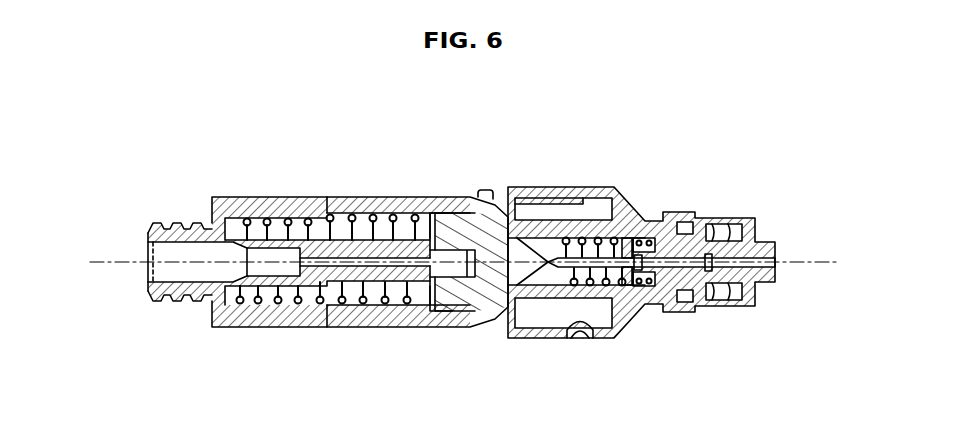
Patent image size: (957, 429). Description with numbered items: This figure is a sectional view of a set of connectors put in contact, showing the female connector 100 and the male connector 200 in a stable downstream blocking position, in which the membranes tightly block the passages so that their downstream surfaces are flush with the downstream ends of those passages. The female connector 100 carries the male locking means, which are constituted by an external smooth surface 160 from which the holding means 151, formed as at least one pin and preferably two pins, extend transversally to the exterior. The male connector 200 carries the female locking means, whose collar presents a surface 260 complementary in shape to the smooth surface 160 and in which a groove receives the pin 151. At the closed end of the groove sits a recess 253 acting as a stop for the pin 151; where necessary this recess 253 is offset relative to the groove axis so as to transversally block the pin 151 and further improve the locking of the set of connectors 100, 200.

The female connector 100 is at (362, 162).
The holding means 151 is at (482, 189).
The smooth surface 160 is at (485, 322).
The male connector 200 is at (726, 179).
The surface 260 is at (541, 211).
The recess 253 is at (588, 352).